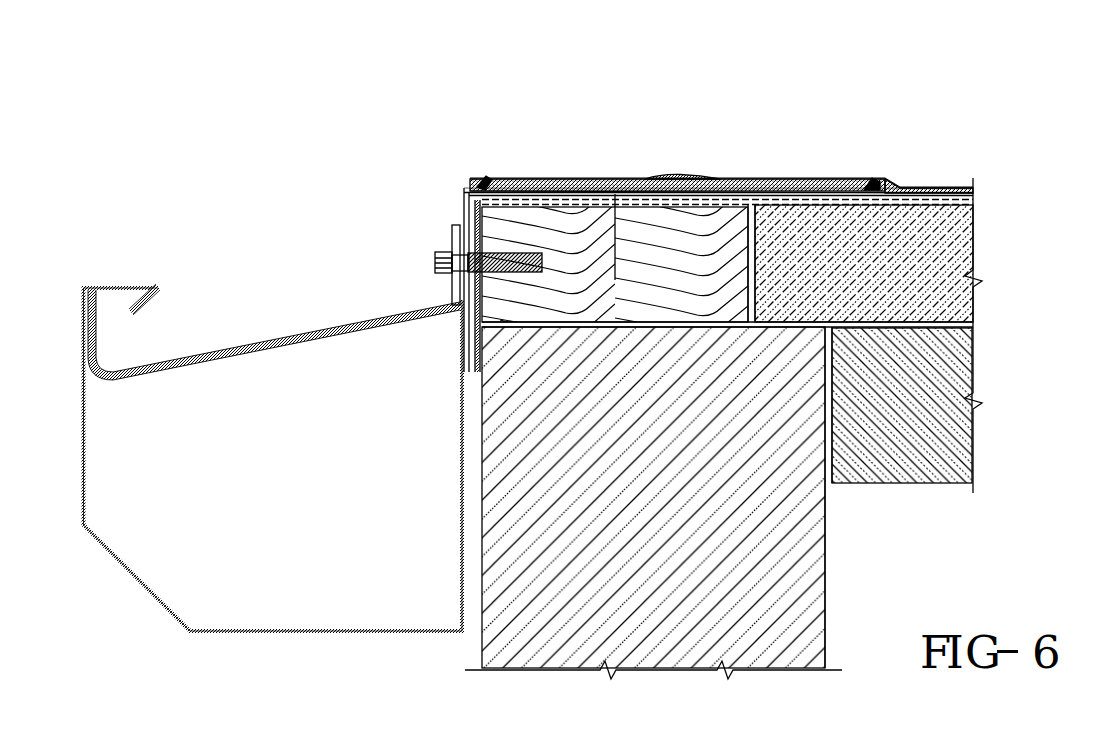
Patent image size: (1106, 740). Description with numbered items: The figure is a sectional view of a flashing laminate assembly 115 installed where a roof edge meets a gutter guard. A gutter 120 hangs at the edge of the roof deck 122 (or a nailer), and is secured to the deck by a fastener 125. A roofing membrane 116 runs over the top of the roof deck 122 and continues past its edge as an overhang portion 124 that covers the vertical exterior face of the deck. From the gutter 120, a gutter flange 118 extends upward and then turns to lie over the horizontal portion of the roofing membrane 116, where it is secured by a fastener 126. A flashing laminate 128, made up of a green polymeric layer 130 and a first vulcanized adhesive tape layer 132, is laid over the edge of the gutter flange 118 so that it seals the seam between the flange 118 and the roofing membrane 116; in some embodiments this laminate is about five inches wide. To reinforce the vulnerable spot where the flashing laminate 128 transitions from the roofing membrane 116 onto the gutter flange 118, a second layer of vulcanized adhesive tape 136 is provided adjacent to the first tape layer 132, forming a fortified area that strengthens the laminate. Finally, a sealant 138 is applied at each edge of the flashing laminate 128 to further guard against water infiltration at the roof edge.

The flashing laminate assembly 115 is at (637, 108).
The roofing membrane 116 is at (941, 190).
The gutter flange 118 is at (462, 188).
The gutter 120 is at (125, 566).
The roof deck 122 is at (616, 279).
The overhang portion 124 is at (455, 298).
The fastener 125 is at (478, 250).
The fastener 126 is at (620, 236).
The flashing laminate 128 is at (742, 178).
The green polymeric layer 130 is at (798, 185).
The first vulcanized adhesive tape layer 132 is at (546, 191).
The second layer of vulcanized adhesive tape 136 is at (706, 178).
The sealant 138 is at (485, 178).